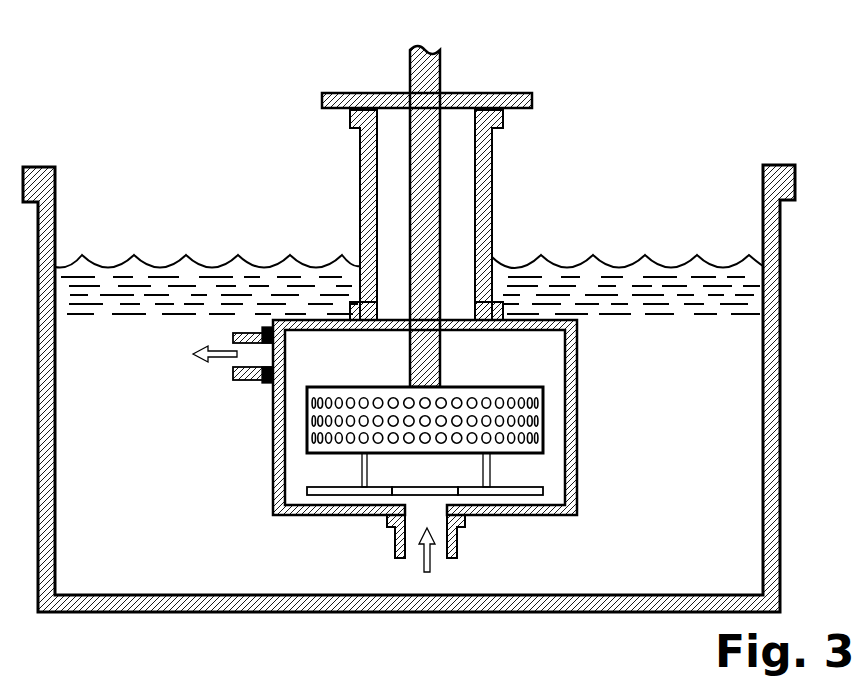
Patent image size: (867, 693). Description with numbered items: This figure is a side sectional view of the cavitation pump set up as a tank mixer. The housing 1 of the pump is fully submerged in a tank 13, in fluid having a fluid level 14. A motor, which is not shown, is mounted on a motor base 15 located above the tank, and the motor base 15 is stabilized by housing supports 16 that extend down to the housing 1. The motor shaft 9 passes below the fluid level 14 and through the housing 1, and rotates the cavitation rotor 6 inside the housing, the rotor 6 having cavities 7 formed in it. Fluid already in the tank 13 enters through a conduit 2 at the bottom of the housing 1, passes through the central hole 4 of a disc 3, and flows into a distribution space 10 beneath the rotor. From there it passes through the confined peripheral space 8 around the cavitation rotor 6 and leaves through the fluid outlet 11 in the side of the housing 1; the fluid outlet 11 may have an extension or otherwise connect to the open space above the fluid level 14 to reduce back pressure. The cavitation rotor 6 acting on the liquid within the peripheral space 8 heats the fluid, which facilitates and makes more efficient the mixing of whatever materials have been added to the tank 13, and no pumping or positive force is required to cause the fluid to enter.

The housing 1 is at (578, 370).
The conduit 2 is at (395, 535).
The disc 3 is at (343, 492).
The central hole 4 is at (427, 492).
The cavitation rotor 6 is at (452, 388).
The cavities 7 is at (358, 403).
The peripheral space 8 is at (297, 422).
The motor shaft 9 is at (410, 186).
The distribution space 10 is at (450, 467).
The fluid outlet 11 is at (245, 378).
The tank 13 is at (55, 207).
The fluid level 14 is at (203, 268).
The motor base 15 is at (515, 94).
The housing supports 16 is at (492, 219).